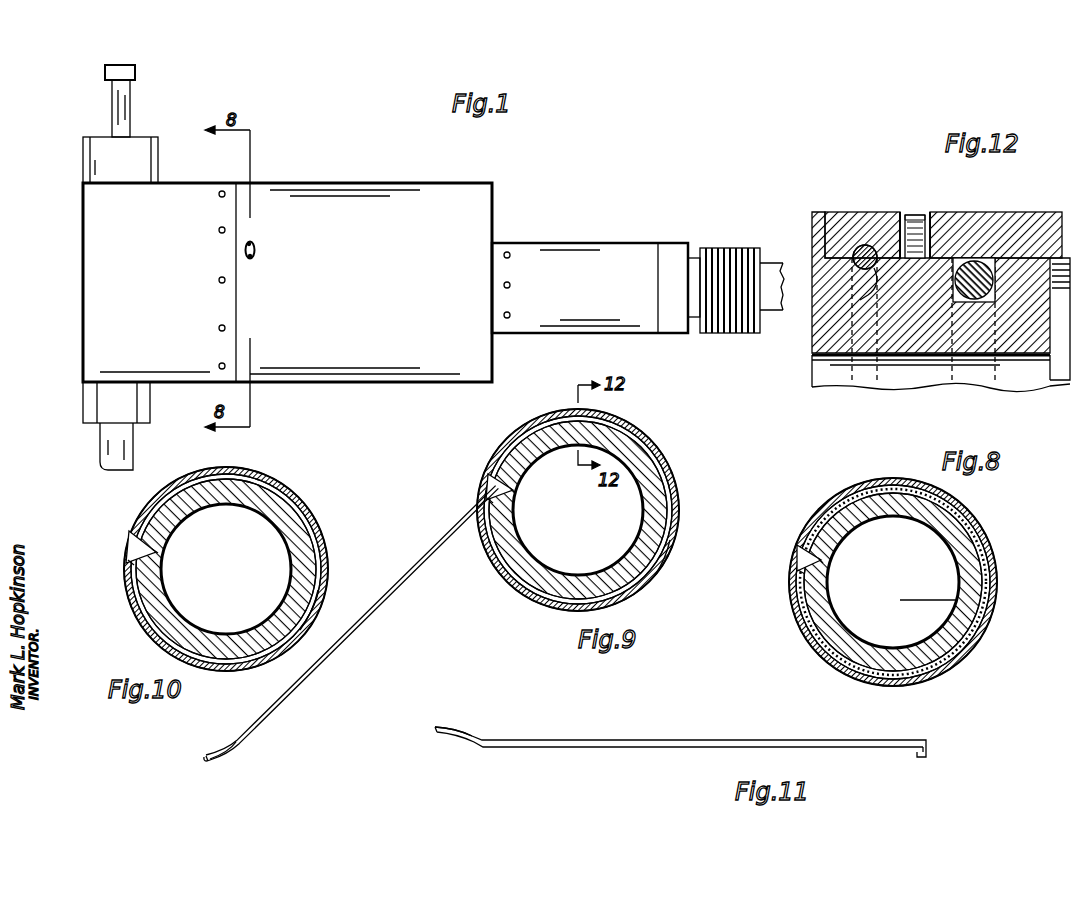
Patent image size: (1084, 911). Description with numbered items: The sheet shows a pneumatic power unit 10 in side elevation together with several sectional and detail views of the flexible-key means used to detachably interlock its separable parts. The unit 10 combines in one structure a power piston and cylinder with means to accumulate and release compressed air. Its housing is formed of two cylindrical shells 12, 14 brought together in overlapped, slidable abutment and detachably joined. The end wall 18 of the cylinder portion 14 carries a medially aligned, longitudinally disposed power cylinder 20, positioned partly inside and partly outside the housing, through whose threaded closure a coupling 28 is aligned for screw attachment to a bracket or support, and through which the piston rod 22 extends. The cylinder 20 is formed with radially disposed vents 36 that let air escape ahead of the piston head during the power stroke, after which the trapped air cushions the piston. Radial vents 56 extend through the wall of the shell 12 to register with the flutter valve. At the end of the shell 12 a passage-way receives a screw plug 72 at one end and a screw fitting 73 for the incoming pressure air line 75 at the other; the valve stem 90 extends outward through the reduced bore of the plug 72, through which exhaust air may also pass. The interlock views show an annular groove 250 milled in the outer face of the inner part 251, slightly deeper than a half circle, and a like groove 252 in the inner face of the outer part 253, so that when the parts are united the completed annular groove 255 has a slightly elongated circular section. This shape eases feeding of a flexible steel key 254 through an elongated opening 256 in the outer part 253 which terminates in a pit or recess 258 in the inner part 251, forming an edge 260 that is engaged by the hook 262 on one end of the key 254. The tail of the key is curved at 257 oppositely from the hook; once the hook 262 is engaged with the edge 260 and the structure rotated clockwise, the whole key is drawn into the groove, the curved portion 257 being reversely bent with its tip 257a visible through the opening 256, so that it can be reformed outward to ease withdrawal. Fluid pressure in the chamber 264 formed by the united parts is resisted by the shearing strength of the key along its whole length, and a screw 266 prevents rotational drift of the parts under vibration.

In FIG. 1, the pneumatic power unit 10 is at (482, 148).
In FIG. 1, the cylindrical shell 12 is at (145, 238).
In FIG. 1, the cylinder portion 14 is at (397, 215).
In FIG. 1, the end wall 18 is at (495, 218).
In FIG. 1, the power cylinder 20 is at (558, 245).
In FIG. 1, the piston rod 22 is at (775, 262).
In FIG. 1, the coupling 28 is at (672, 244).
In FIG. 1, the radial vents 36 is at (510, 314).
In FIG. 1, the radial vents 56 is at (221, 326).
In FIG. 1, the screw plug 72 is at (100, 158).
In FIG. 1, the screw fitting 73 is at (106, 406).
In FIG. 1, the pressure air line 75 is at (110, 450).
In FIG. 1, the valve stem 90 is at (124, 106).
In FIG. 12, the annular groove 250 is at (845, 307).
In FIG. 10, the annular groove 250 is at (262, 523).
In FIG. 9, the annular groove 250 is at (578, 510).
In FIG. 8, the annular groove 250 is at (893, 582).
In FIG. 12, the inner part 251 is at (831, 374).
In FIG. 10, the inner part 251 is at (168, 612).
In FIG. 8, the inner part 251 is at (960, 600).
In FIG. 12, the groove 252 is at (862, 245).
In FIG. 10, the groove 252 is at (272, 500).
In FIG. 9, the groove 252 is at (578, 510).
In FIG. 8, the groove 252 is at (893, 582).
In FIG. 12, the outer part 253 is at (843, 212).
In FIG. 10, the outer part 253 is at (148, 512).
In FIG. 9, the outer part 253 is at (578, 510).
In FIG. 8, the outer part 253 is at (990, 560).
In FIG. 12, the flexible steel key 254 is at (874, 253).
In FIG. 9, the flexible steel key 254 is at (389, 592).
In FIG. 8, the flexible steel key 254 is at (985, 586).
In FIG. 11, the flexible steel key 254 is at (690, 722).
In FIG. 10, the completed annular groove 255 is at (318, 587).
In FIG. 9, the completed annular groove 255 is at (666, 550).
In FIG. 1, the elongated opening 256 is at (256, 250).
In FIG. 10, the elongated opening 256 is at (134, 541).
In FIG. 9, the elongated opening 256 is at (490, 484).
In FIG. 8, the elongated opening 256 is at (800, 562).
In FIG. 9, the curved tail 257 is at (228, 740).
In FIG. 11, the curved tail 257 is at (472, 734).
In FIG. 1, the tip end 257a is at (251, 244).
In FIG. 9, the tip end 257a is at (205, 760).
In FIG. 10, the pit or recess 258 is at (156, 548).
In FIG. 9, the pit or recess 258 is at (514, 490).
In FIG. 8, the pit or recess 258 is at (822, 565).
In FIG. 10, the edge 260 is at (130, 556).
In FIG. 9, the edge 260 is at (512, 500).
In FIG. 8, the edge 260 is at (815, 574).
In FIG. 1, the hook 262 is at (256, 256).
In FIG. 11, the hook 262 is at (917, 760).
In FIG. 9, the chamber 264 is at (624, 506).
In FIG. 8, the chamber 264 is at (930, 560).
In FIG. 12, the screw 266 is at (935, 232).